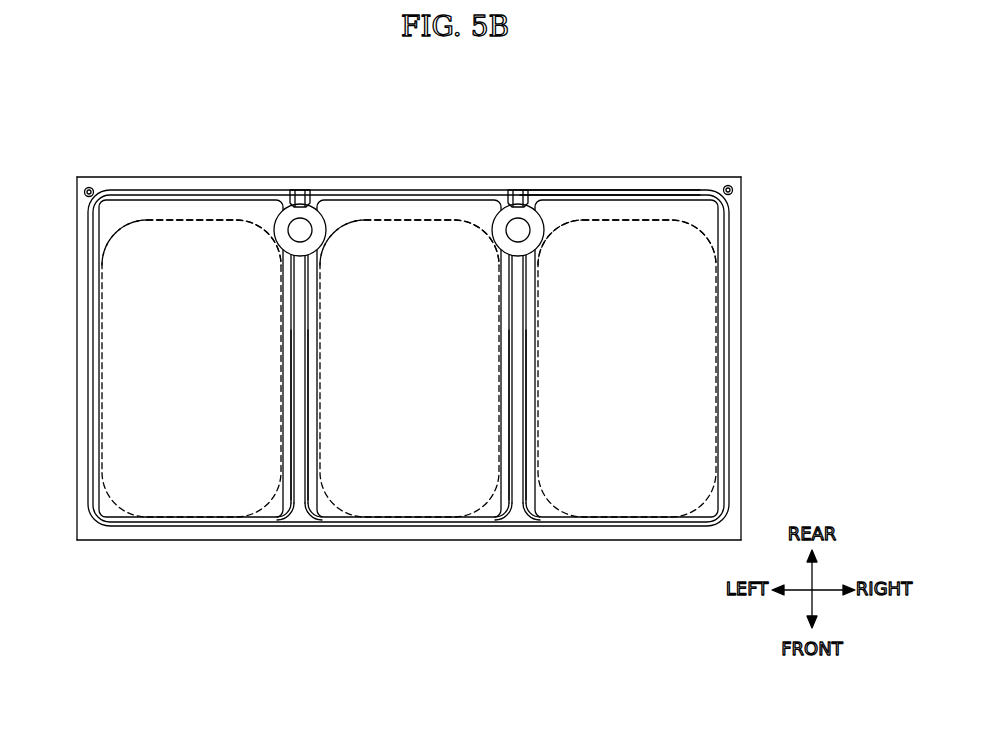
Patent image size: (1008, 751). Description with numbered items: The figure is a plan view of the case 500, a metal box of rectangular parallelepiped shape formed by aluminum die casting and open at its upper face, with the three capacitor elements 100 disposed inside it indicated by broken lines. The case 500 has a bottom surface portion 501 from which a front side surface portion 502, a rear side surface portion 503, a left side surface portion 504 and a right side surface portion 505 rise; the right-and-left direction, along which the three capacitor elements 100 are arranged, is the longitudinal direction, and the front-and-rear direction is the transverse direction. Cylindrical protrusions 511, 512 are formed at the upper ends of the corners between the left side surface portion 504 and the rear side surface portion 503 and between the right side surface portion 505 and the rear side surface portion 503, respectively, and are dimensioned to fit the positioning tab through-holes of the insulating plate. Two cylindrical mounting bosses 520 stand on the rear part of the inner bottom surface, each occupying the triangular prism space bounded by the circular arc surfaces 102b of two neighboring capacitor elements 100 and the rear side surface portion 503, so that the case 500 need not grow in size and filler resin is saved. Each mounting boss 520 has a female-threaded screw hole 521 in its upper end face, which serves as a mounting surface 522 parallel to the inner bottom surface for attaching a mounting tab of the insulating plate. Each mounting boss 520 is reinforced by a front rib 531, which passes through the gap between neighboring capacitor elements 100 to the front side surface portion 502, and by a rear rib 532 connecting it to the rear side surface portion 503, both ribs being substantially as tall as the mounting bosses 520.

The case 500 is at (782, 208).
The bottom surface portion 501 is at (173, 190).
The front side surface portion 502 is at (348, 542).
The rear side surface portion 503 is at (648, 190).
The left side surface portion 504 is at (76, 358).
The right side surface portion 505 is at (742, 358).
The protrusion 511 is at (94, 180).
The protrusion 512 is at (742, 175).
The mounting boss 520 is at (320, 257).
The screw hole 521 is at (300, 230).
The mounting surface 522 is at (323, 233).
The rib 531 is at (296, 355).
The rib 532 is at (305, 190).
The capacitor element 100 is at (192, 520).
The circular arc surface 102b is at (255, 232).